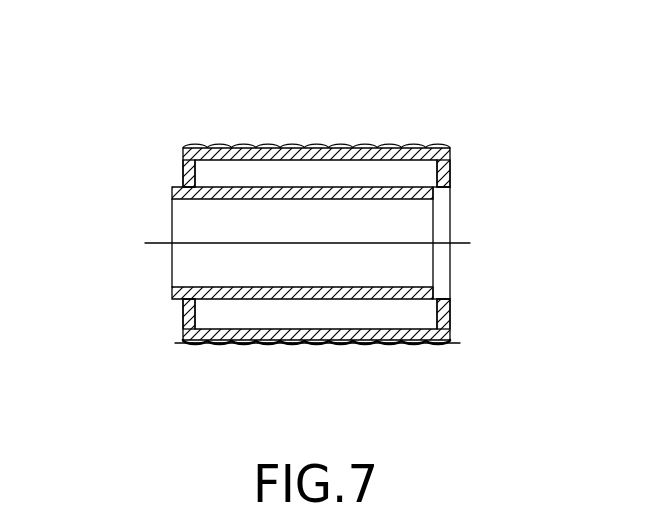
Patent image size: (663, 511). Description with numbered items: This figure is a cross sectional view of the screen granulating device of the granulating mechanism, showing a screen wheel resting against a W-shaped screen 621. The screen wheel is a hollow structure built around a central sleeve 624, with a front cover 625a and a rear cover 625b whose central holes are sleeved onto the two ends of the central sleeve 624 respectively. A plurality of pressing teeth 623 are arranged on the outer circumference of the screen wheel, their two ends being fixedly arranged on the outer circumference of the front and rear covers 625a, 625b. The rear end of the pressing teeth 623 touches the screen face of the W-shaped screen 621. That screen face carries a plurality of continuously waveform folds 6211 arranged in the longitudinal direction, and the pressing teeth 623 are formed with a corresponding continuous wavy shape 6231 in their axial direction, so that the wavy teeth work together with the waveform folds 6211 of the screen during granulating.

The W-shaped screen 621 is at (440, 343).
The continuously waveform folds 6211 is at (393, 345).
The pressing teeth 623 is at (300, 147).
The continuous wavy shape 6231 is at (348, 145).
The central sleeve 624 is at (172, 188).
The front cover 625a is at (450, 147).
The rear cover 625b is at (188, 148).